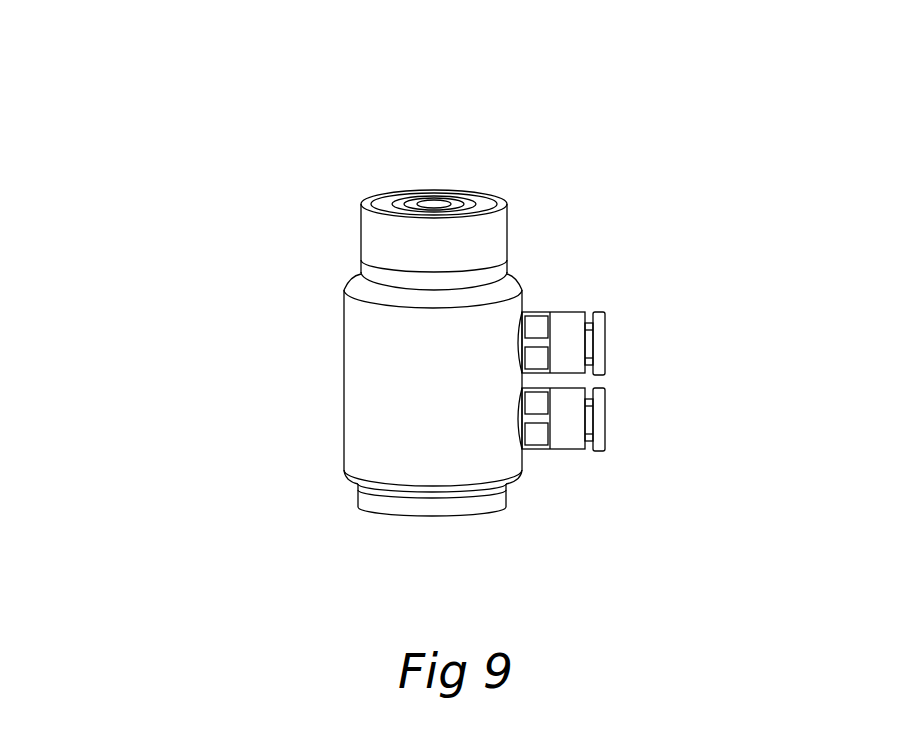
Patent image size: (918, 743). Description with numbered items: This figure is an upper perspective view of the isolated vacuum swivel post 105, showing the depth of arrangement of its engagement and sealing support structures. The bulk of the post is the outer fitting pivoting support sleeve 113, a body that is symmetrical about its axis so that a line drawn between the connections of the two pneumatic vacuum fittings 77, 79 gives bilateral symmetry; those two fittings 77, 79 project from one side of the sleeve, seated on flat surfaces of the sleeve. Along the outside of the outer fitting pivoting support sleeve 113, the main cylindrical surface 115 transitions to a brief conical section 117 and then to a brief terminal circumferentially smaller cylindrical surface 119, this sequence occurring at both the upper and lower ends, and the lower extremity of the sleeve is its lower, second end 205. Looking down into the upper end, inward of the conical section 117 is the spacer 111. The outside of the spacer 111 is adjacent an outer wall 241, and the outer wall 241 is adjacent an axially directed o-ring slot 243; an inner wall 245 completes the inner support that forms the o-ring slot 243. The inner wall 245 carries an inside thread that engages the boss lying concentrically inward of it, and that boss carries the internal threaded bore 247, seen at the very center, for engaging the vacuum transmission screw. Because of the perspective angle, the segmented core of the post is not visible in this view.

The vacuum swivel post 105 is at (230, 307).
The spacer 111 is at (510, 233).
The outer fitting pivoting support sleeve 113 is at (332, 467).
The main cylindrical surface 115 is at (350, 385).
The brief conical section 117 is at (518, 290).
The brief terminal circumferentially smaller cylindrical surface 119 is at (360, 283).
The lower, second end 205 is at (485, 514).
The outer wall 241 is at (500, 197).
The axially directed o-ring slot 243 is at (484, 193).
The inner wall 245 is at (466, 192).
The internal threaded bore 247 is at (418, 201).
The pneumatic vacuum fitting 77 is at (605, 307).
The pneumatic vacuum fitting 79 is at (603, 390).